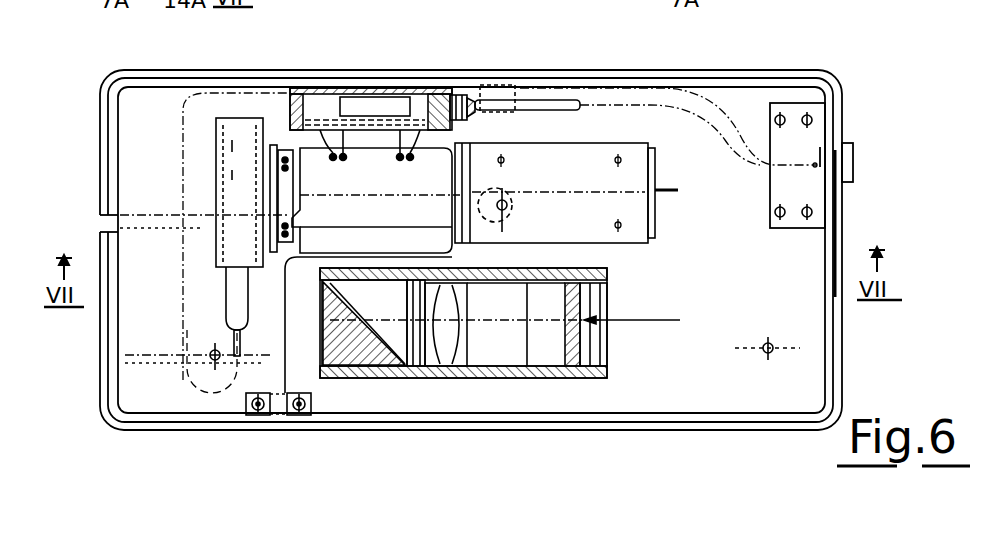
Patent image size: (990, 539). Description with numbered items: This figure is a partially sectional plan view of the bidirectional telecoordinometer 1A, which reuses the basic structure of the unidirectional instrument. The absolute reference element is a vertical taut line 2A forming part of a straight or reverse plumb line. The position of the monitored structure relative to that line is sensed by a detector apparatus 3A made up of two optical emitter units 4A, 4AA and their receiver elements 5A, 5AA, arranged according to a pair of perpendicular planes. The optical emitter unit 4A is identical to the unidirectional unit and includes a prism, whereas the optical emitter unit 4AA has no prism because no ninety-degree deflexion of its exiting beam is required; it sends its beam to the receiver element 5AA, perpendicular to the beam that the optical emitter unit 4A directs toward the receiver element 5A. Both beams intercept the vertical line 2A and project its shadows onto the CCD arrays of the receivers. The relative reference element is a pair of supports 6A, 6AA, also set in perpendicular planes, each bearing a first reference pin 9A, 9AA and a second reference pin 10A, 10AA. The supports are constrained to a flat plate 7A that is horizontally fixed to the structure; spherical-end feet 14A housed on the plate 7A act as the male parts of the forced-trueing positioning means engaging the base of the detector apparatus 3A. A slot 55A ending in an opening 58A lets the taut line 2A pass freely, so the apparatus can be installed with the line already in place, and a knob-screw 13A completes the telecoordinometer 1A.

The telecoordinometer 1A is at (820, 50).
The vertical taut line 2A is at (370, 383).
The detector apparatus 3A is at (895, 181).
The optical emitter unit 4A is at (507, 360).
The optical emitter unit 4AA is at (601, 158).
The receiver element 5A is at (350, 110).
The receiver element 5AA is at (236, 181).
The support 6A is at (283, 183).
The support 6AA is at (350, 162).
The flat plate 7A is at (114, 6).
The first reference pin 9A is at (333, 153).
The first reference pin 9AA is at (300, 180).
The second reference pin 10A is at (405, 153).
The second reference pin 10AA is at (277, 147).
The knob-screw 13A is at (506, 203).
The spherical-end feet 14A is at (210, 385).
The slot 55A is at (288, 347).
The opening 58A is at (296, 148).